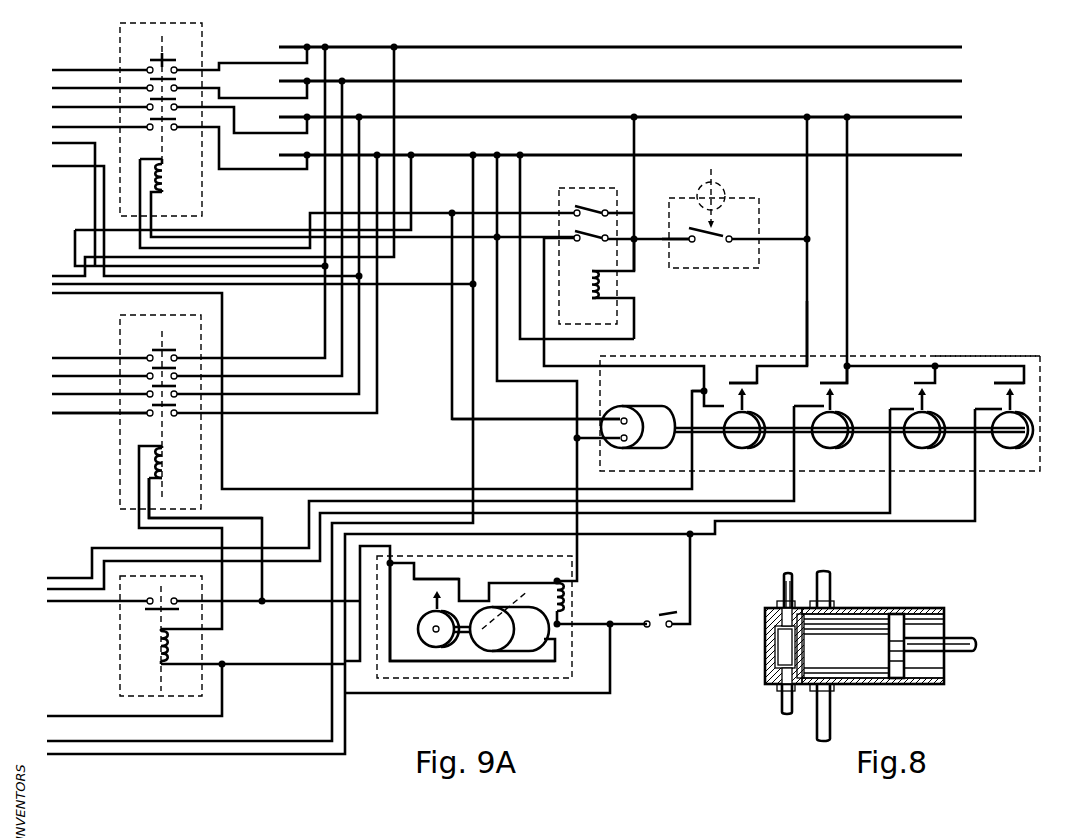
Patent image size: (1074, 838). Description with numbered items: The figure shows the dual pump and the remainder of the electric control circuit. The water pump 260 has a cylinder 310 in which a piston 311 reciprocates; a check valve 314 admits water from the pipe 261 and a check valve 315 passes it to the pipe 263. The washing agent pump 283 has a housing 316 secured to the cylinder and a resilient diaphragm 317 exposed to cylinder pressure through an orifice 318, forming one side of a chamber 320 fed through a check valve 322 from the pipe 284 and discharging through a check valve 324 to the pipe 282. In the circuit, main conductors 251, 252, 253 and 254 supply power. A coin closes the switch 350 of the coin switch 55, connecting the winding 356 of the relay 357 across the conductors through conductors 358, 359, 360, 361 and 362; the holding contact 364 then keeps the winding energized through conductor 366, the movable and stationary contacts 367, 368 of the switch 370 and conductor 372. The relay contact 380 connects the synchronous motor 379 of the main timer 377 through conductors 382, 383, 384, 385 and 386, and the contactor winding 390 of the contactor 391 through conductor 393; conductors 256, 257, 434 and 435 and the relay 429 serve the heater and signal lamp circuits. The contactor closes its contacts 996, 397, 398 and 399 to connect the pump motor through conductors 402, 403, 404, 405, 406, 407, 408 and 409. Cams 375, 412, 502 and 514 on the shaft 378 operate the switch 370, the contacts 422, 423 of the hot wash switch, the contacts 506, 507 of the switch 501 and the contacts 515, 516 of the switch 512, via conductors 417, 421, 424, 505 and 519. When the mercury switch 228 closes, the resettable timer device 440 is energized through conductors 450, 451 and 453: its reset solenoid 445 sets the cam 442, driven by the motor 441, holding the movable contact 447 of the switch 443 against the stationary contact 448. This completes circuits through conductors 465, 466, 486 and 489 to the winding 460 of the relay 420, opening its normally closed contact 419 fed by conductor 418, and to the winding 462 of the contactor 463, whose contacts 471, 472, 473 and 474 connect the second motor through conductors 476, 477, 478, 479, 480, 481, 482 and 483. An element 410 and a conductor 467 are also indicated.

In FIG. 9A, the main conductor 254 is at (932, 45).
In FIG. 9A, the main conductor 253 is at (936, 81).
In FIG. 9A, the main conductor 252 is at (940, 118).
In FIG. 9A, the common main conductor 251 is at (946, 154).
In FIG. 9A, the contactor 391 is at (113, 38).
In FIG. 9A, the contact bar 996 is at (157, 60).
In FIG. 9A, the contact 397 is at (175, 66).
In FIG. 9A, the contact 398 is at (171, 98).
In FIG. 9A, the contact 399 is at (151, 126).
In FIG. 9A, the contactor winding 390 is at (166, 165).
In FIG. 9A, the conductor 402 is at (62, 69).
In FIG. 9A, the conductor 404 is at (64, 87).
In FIG. 9A, the conductor 406 is at (63, 106).
In FIG. 9A, the conductor 408 is at (63, 126).
In FIG. 9A, the conductor 403 is at (261, 62).
In FIG. 9A, the conductor 405 is at (232, 98).
In FIG. 9A, the conductor 407 is at (241, 132).
In FIG. 9A, the conductor 409 is at (236, 168).
In FIG. 9A, the conductor 393 is at (235, 235).
In FIG. 9A, the conductor 256 is at (77, 228).
In FIG. 9A, the conductor 257 is at (47, 267).
In FIG. 9A, the conductor 435 is at (47, 283).
In FIG. 9A, the conductor 434 is at (47, 296).
In FIG. 9A, the conductor 483 is at (378, 266).
In FIG. 9A, the conductor 477 is at (269, 355).
In FIG. 9A, the conductor 479 is at (269, 375).
In FIG. 9A, the conductor 481 is at (273, 393).
In FIG. 9A, the conductor 417 is at (470, 179).
In FIG. 9A, the conductor 383 is at (448, 211).
In FIG. 9A, the conductor 384 is at (450, 416).
In FIG. 9A, the conductor 386 is at (496, 152).
In FIG. 9A, the conductor 385 is at (571, 450).
In FIG. 9A, the relay 357 is at (556, 188).
In FIG. 9A, the second relay contact 380 is at (604, 197).
In FIG. 9A, the conductor 382 is at (632, 168).
In FIG. 9A, the holding contact 364 is at (571, 227).
In FIG. 9A, the conductor 360 is at (661, 236).
In FIG. 9A, the conductor 361 is at (632, 271).
In FIG. 9A, the relay winding 356 is at (627, 292).
In FIG. 9A, the conductor 362 is at (636, 334).
In FIG. 9A, the conductor 366 is at (542, 352).
In FIG. 9A, the coin switch 55 is at (757, 198).
In FIG. 9A, the switch 350 is at (718, 236).
In FIG. 9A, the conductor 359 is at (793, 236).
In FIG. 9A, the conductor 358 is at (807, 204).
In FIG. 9A, the relay 429 is at (846, 200).
In FIG. 9A, the conductor 372 is at (805, 330).
In FIG. 9A, the main timer 377 is at (1024, 472).
In FIG. 9A, the synchronous motor 379 is at (660, 450).
In FIG. 9A, the drive shaft 378 is at (776, 432).
In FIG. 9A, the cam 375 is at (744, 449).
In FIG. 9A, the movable contact 367 is at (747, 400).
In FIG. 9A, the stationary contact 368 is at (743, 384).
In FIG. 9A, the switch 370 is at (755, 385).
In FIG. 9A, the rotatable cam 514 is at (823, 448).
In FIG. 9A, the movable contact 515 is at (832, 402).
In FIG. 9A, the switch 512 is at (833, 385).
In FIG. 9A, the stationary contact 516 is at (841, 382).
In FIG. 9A, the cam 502 is at (911, 450).
In FIG. 9A, the movable contact 506 is at (923, 404).
In FIG. 9A, the stationary contact 507 is at (921, 388).
In FIG. 9A, the switch 501 is at (927, 387).
In FIG. 9A, the cam 412 is at (998, 450).
In FIG. 9A, the movable contact 422 is at (1018, 414).
In FIG. 9A, the switch 410 is at (1021, 399).
In FIG. 9A, the stationary contact 423 is at (1005, 376).
In FIG. 9A, the conductor 424 is at (951, 361).
In FIG. 9A, the conductor 519 is at (792, 497).
In FIG. 9A, the conductor 505 is at (888, 499).
In FIG. 9A, the conductor 421 is at (973, 504).
In FIG. 9A, the contactor 463 is at (116, 455).
In FIG. 9A, the contact 471 is at (155, 348).
In FIG. 9A, the contact 472 is at (143, 366).
In FIG. 9A, the contact 473 is at (142, 384).
In FIG. 9A, the contact 474 is at (142, 402).
In FIG. 9A, the conductor 476 is at (50, 357).
In FIG. 9A, the conductor 478 is at (50, 375).
In FIG. 9A, the conductor 480 is at (50, 393).
In FIG. 9A, the conductor 482 is at (50, 412).
In FIG. 9A, the winding 462 is at (165, 470).
In FIG. 9A, the conductor 467 is at (243, 519).
In FIG. 9A, the conductor 466 is at (218, 531).
In FIG. 9A, the relay 420 is at (116, 639).
In FIG. 9A, the conductor 418 is at (110, 608).
In FIG. 9A, the normally closed contact 419 is at (150, 612).
In FIG. 9A, the relay winding 460 is at (151, 662).
In FIG. 9A, the conductor 465 is at (263, 663).
In FIG. 9A, the conductor 486 is at (84, 712).
In FIG. 9A, the conductor 489 is at (80, 752).
In FIG. 9A, the resettable timer device 440 is at (574, 616).
In FIG. 9A, the stationary contact 448 is at (453, 574).
In FIG. 9A, the switch 443 is at (455, 578).
In FIG. 9A, the movable contact 447 is at (439, 594).
In FIG. 9A, the cam 442 is at (430, 609).
In FIG. 9A, the synchronous motor 441 is at (528, 652).
In FIG. 9A, the conductor 450 is at (387, 664).
In FIG. 9A, the reset solenoid 445 is at (573, 594).
In FIG. 9A, the conductor 451 is at (588, 632).
In FIG. 9A, the mercury switch 228 is at (667, 609).
In FIG. 9A, the conductor 453 is at (689, 604).
In FIG. 8, the conductor 453 is at (740, 594).
In FIG. 8, the water pump 260 is at (880, 605).
In FIG. 8, the pump 283 is at (763, 653).
In FIG. 8, the chamber 320 is at (778, 642).
In FIG. 8, the housing 316 is at (765, 673).
In FIG. 8, the resilient diaphragm 317 is at (808, 645).
In FIG. 8, the orifice 318 is at (807, 657).
In FIG. 8, the piston 311 is at (887, 652).
In FIG. 8, the cylinder 310 is at (931, 688).
In FIG. 8, the check valve 314 is at (835, 692).
In FIG. 8, the pipe 284 is at (772, 578).
In FIG. 8, the check valve 322 is at (773, 600).
In FIG. 8, the pipe 263 is at (832, 577).
In FIG. 8, the check valve 315 is at (836, 602).
In FIG. 8, the check valve 324 is at (775, 692).
In FIG. 8, the pipe 282 is at (780, 710).
In FIG. 8, the pipe 261 is at (829, 732).